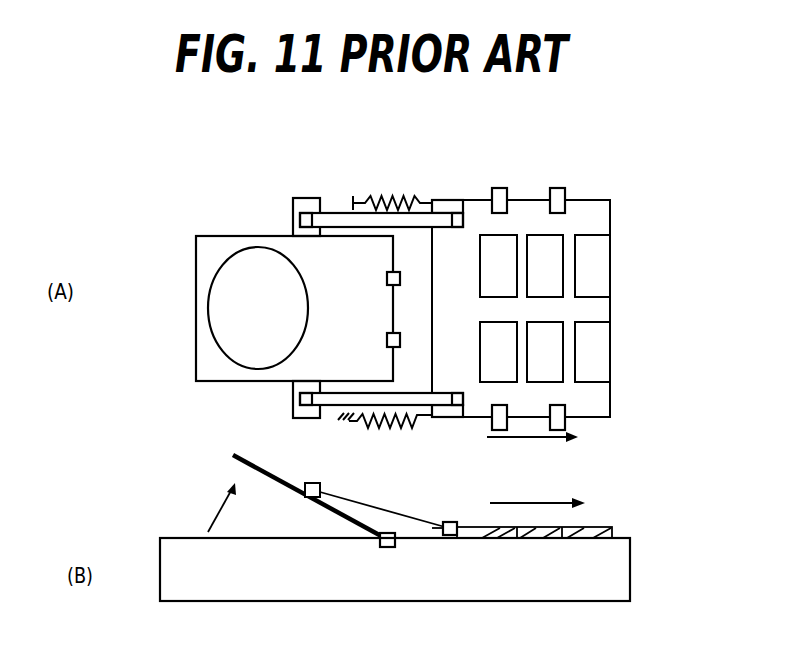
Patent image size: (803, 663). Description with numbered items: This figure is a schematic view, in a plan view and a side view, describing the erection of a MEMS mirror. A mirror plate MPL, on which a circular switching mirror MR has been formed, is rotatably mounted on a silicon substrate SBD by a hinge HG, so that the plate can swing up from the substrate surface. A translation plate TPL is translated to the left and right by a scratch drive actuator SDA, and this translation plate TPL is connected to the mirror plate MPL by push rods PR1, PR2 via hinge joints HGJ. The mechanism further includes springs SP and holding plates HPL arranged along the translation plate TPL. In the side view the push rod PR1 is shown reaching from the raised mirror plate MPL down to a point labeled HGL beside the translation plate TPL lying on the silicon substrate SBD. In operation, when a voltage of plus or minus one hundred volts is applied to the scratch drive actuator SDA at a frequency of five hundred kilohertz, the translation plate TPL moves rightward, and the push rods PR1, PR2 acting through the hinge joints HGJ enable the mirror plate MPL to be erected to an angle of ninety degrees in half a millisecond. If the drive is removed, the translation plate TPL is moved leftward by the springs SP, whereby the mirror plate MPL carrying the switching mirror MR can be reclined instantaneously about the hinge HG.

The mirror plate MPL is at (196, 253).
The switching mirror MR is at (210, 339).
The translation plate TPL is at (595, 200).
The scratch drive actuator SDA is at (553, 342).
The holding plate HPL is at (557, 188).
The hinge joint HGJ is at (310, 198).
The push rod PR2 is at (330, 213).
The push rod PR1 is at (330, 407).
The spring SP is at (393, 195).
The hinge HG is at (400, 278).
The hinge line HGL is at (451, 537).
The silicon substrate SBD is at (631, 582).